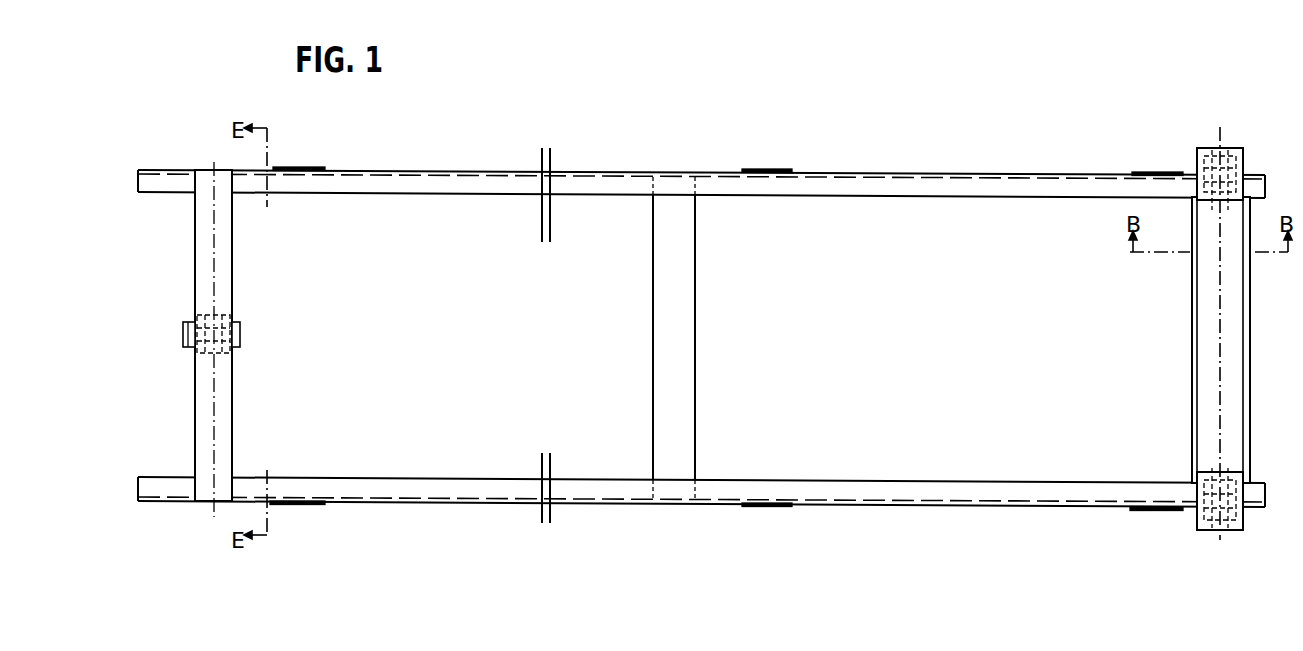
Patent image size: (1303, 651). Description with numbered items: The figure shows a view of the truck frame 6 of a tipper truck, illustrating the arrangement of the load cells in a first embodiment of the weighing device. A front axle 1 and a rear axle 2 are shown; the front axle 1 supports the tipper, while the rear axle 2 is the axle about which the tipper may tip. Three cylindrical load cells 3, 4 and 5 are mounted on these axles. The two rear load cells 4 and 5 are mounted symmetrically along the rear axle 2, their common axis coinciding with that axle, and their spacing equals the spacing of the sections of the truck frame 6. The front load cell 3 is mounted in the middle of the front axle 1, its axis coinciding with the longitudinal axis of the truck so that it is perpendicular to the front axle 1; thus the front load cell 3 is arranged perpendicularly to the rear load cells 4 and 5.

The front axle 1 is at (214, 425).
The rear axle 2 is at (1220, 425).
The load cell 3 is at (232, 320).
The load cell 4 is at (1200, 530).
The load cell 5 is at (1206, 146).
The truck frame 6 is at (625, 183).